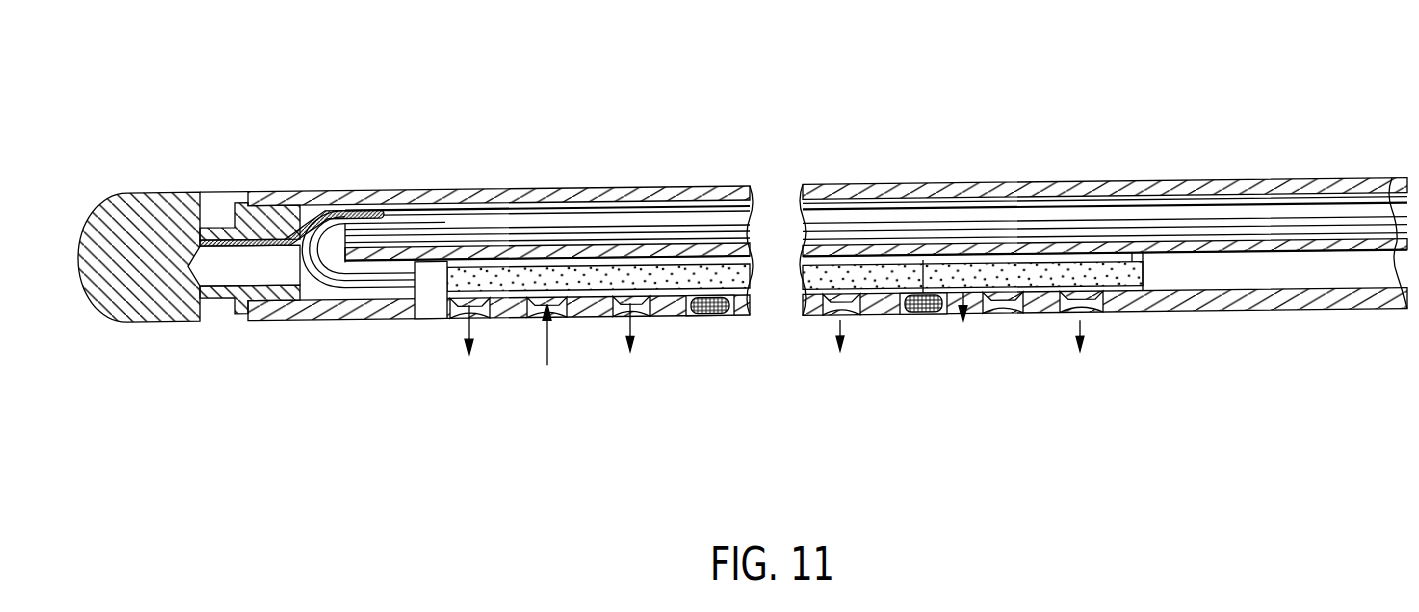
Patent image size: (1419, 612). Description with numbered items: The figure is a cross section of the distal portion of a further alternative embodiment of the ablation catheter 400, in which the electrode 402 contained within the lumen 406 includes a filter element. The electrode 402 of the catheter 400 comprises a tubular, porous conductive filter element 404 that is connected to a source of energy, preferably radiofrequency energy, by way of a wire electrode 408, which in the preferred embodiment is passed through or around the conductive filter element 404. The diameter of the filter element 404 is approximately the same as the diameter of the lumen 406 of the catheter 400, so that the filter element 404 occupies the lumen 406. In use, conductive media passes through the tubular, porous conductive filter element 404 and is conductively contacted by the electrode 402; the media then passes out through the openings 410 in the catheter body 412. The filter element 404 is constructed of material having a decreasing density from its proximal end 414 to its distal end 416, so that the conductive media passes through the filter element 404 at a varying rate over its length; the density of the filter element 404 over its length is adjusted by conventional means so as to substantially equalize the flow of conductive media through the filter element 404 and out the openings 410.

The ablation catheter 400 is at (742, 219).
The electrode 402 is at (965, 325).
The tubular, porous conductive filter element 404 is at (1013, 295).
The lumen 406 is at (1073, 262).
The wire electrode 408 is at (393, 283).
The openings 410 is at (774, 344).
The catheter body 412 is at (918, 192).
The proximal end 414 is at (1147, 280).
The distal end 416 is at (467, 259).